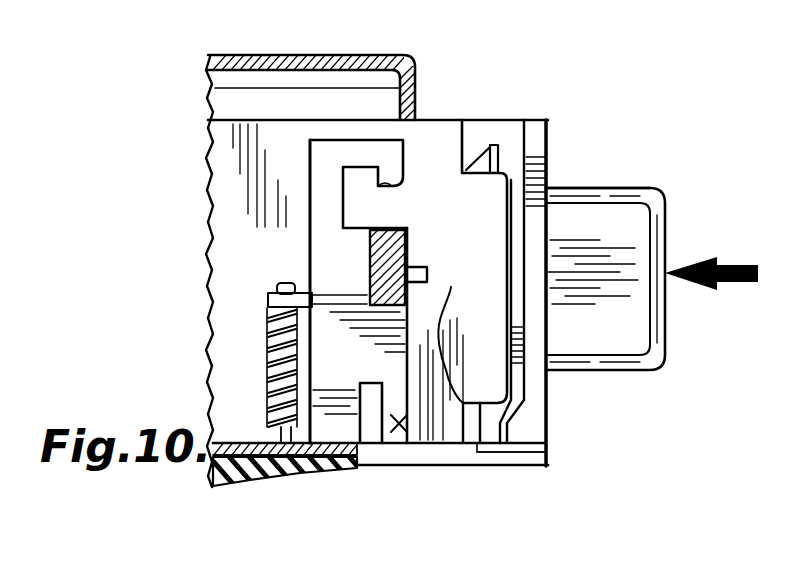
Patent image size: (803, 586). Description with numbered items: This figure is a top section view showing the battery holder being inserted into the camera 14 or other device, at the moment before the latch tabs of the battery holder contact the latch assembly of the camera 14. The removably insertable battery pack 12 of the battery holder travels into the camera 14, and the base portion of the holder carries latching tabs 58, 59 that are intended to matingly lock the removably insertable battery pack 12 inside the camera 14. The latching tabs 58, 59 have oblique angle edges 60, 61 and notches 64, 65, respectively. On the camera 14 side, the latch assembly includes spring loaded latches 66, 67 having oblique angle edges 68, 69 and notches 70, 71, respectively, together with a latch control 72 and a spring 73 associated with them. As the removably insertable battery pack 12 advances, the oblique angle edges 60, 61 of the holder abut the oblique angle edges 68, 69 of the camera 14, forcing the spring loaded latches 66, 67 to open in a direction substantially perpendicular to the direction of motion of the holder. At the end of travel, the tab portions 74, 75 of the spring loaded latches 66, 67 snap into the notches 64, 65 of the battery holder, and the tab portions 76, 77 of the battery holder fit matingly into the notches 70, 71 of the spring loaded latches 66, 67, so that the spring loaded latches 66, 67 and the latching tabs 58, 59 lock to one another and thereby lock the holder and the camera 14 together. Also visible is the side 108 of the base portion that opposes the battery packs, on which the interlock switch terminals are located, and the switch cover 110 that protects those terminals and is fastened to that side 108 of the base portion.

The removably insertable battery pack 12 is at (667, 344).
The camera 14 is at (200, 104).
The latching tab 58 is at (490, 430).
The latching tab 59 is at (510, 148).
The oblique angle edge 60 is at (451, 287).
The oblique angle edge 61 is at (480, 261).
The notch 64 is at (520, 397).
The notch 65 is at (530, 162).
The spring loaded latch 66 is at (402, 462).
The spring loaded latch 67 is at (404, 184).
The oblique angle edge 68 is at (372, 447).
The oblique angle edge 69 is at (445, 218).
The notch 70 is at (357, 470).
The notch 71 is at (357, 200).
The latch control 72 is at (411, 255).
The spring 73 is at (266, 340).
The tab portion 74 is at (403, 437).
The tab portion 75 is at (392, 151).
The tab portion 76 is at (512, 468).
The tab portion 77 is at (502, 135).
The side of the base portion 108 is at (600, 169).
The switch cover 110 is at (667, 236).